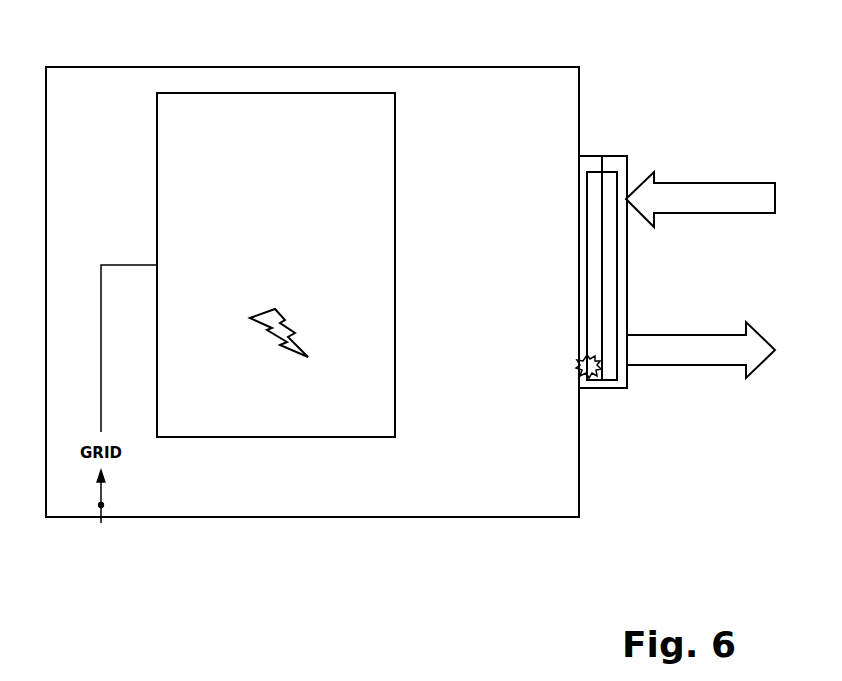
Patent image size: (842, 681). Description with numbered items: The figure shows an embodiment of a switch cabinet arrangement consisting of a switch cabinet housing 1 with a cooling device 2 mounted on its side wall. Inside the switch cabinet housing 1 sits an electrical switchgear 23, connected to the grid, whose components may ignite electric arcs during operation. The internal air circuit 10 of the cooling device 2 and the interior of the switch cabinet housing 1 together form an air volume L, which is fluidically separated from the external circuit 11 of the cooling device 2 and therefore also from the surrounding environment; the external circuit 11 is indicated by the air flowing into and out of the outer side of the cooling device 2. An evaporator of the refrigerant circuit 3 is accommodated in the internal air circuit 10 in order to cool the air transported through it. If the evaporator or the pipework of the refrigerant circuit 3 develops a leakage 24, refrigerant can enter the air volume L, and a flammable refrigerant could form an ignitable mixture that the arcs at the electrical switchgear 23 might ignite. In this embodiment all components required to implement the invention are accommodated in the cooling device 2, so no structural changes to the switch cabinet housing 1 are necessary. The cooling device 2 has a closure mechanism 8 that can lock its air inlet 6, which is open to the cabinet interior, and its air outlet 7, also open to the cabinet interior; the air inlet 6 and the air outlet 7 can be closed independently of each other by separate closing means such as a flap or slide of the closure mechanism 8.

The switch cabinet housing 1 is at (446, 67).
The air volume L is at (112, 100).
The electrical switchgear 23 is at (270, 120).
The cooling device 2 is at (617, 156).
The internal air circuit 10 is at (594, 160).
The refrigerant circuit 3 is at (617, 243).
The air inlet 6 is at (579, 181).
The closure mechanism 8 is at (579, 266).
The external circuit 11 is at (620, 282).
The air outlet 7 is at (579, 348).
The leakage 24 is at (588, 378).